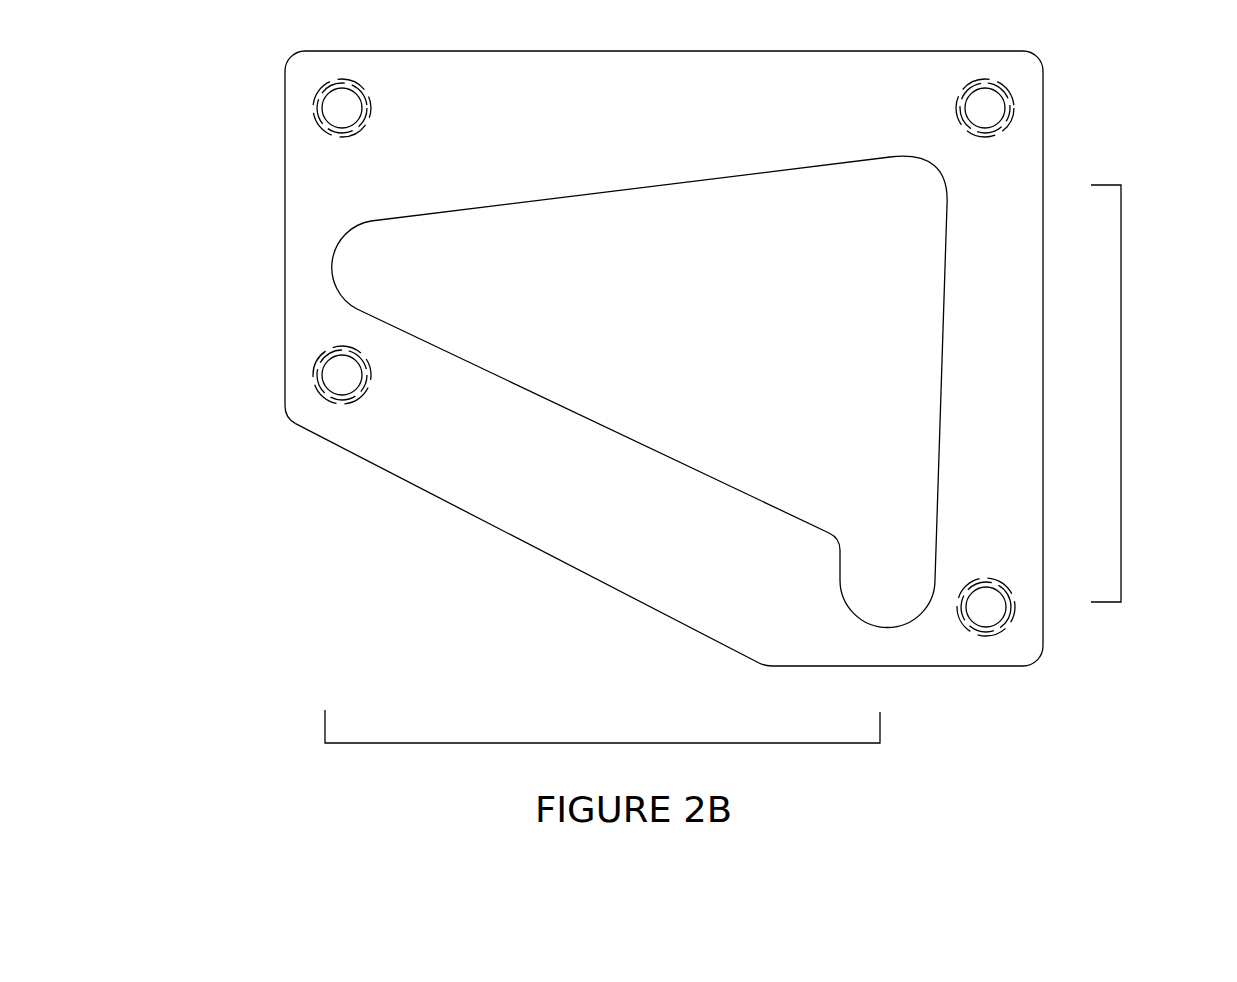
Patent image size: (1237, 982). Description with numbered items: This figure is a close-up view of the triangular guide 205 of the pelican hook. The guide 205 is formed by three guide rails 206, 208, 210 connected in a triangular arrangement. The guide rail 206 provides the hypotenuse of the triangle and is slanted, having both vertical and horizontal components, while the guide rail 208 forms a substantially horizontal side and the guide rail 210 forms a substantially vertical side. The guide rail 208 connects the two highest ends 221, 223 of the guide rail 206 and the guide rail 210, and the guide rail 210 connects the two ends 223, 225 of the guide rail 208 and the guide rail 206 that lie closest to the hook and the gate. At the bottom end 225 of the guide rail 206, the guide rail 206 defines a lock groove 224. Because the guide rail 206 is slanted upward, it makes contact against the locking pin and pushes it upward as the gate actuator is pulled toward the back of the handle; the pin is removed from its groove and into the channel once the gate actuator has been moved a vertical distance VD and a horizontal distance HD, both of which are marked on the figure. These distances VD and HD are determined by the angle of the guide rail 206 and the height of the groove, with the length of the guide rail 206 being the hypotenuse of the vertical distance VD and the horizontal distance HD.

The guide 205 is at (277, 118).
The guide rail 206 is at (467, 468).
The guide rail 208 is at (738, 122).
The guide rail 210 is at (950, 430).
The highest end of guide rail 206 221 is at (310, 290).
The highest end of guide rail 210 223 is at (1019, 152).
The lock groove 224 is at (866, 590).
The bottom end of guide rail 206 225 is at (835, 628).
The horizontal distance HD is at (383, 743).
The vertical distance VD is at (1121, 324).